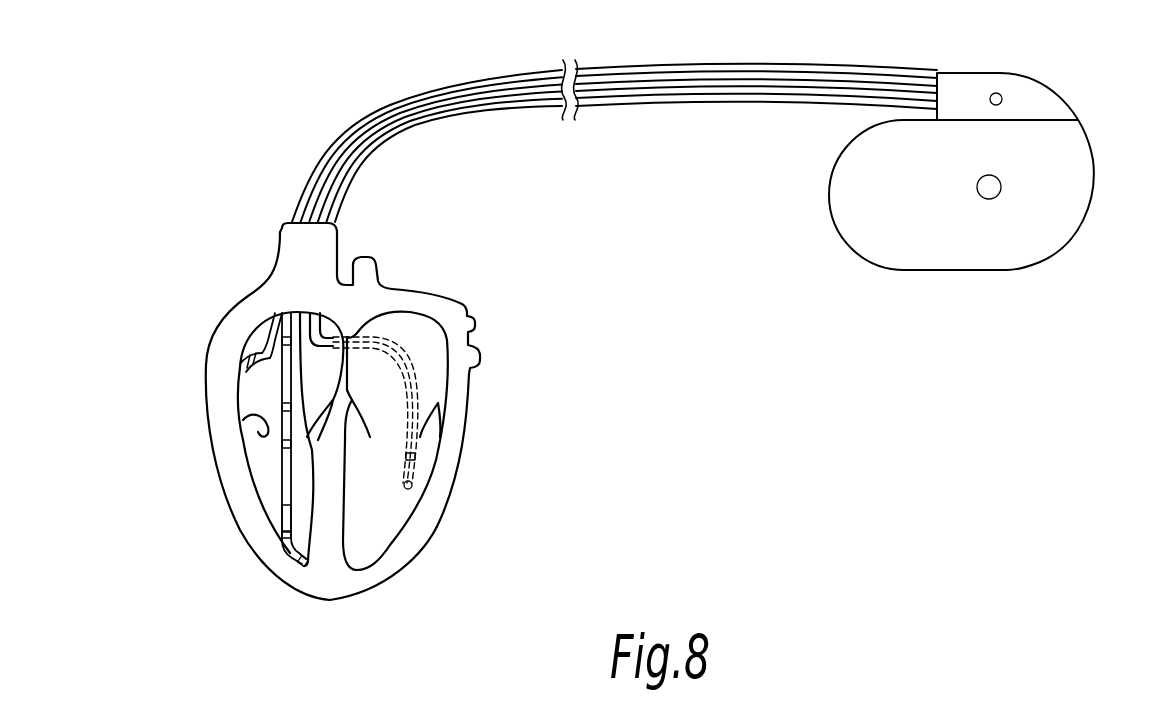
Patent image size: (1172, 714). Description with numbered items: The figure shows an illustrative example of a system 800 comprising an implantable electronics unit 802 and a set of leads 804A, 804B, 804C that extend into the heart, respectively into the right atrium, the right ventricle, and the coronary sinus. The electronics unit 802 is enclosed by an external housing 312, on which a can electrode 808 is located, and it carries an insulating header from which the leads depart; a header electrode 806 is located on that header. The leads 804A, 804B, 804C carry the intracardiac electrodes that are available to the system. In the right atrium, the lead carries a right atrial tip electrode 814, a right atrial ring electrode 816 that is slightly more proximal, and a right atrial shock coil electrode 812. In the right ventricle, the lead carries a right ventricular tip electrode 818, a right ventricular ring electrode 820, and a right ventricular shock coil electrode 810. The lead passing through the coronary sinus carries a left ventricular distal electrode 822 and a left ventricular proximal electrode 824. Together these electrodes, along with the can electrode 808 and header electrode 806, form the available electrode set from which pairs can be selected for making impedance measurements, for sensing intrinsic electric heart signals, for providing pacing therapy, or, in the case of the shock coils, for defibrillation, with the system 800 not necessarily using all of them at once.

The system 800 is at (177, 115).
The implantable electronics unit 802 is at (1057, 237).
The housing 312 is at (862, 235).
The header electrode 806 is at (1000, 93).
The can electrode 808 is at (1001, 186).
The lead 804A is at (764, 68).
The lead 804B is at (818, 86).
The lead 804C is at (728, 102).
The right ventricular shock coil electrode 810 is at (283, 473).
The right atrial shock coil electrode 812 is at (277, 388).
The right atrial tip electrode 814 is at (263, 352).
The right atrial ring electrode 816 is at (258, 353).
The right ventricular tip electrode 818 is at (305, 565).
The right ventricular ring electrode 820 is at (293, 528).
The left ventricular distal electrode 822 is at (414, 481).
The left ventricular proximal electrode 824 is at (415, 455).